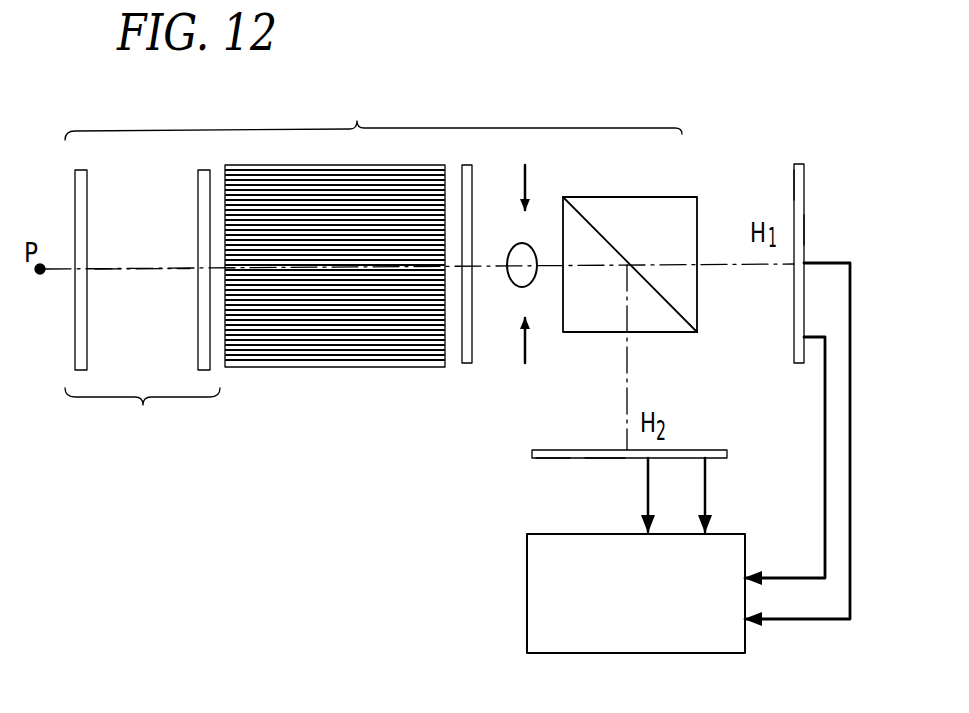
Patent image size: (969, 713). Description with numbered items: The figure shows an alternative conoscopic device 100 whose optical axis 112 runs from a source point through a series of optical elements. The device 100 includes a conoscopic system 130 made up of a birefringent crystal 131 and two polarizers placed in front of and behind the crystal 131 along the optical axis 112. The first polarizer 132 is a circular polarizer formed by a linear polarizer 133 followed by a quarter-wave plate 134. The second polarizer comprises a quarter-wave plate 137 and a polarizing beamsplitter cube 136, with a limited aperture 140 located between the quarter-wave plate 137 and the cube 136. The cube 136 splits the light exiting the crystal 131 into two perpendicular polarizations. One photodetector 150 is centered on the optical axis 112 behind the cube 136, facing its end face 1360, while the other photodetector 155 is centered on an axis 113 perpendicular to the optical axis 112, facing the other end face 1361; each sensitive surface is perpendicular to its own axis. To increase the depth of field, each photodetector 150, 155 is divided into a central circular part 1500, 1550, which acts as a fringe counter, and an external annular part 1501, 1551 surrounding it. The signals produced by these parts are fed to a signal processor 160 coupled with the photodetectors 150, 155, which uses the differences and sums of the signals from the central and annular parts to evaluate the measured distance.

The device 100 is at (58, 176).
The optical axis 112 is at (147, 267).
The axis 113 is at (627, 355).
The conoscopic system 130 is at (373, 114).
The birefringent crystal 131 is at (312, 368).
The first polarizer 132 is at (142, 414).
The linear polarizer 133 is at (75, 332).
The quarter-wave plate 134 is at (198, 338).
The polarizing beamsplitter cube 136 is at (678, 197).
The quarter-wave plate 137 is at (461, 363).
The limited aperture 140 is at (528, 178).
The photodetector 150 is at (800, 158).
The photodetector 155 is at (522, 457).
The signal processor 160 is at (527, 592).
The end face 1360 is at (697, 290).
The end face 1361 is at (675, 334).
The central circular part 1500 is at (804, 232).
The external annular part 1501 is at (804, 187).
The central circular part 1550 is at (602, 460).
The external annular part 1551 is at (548, 460).